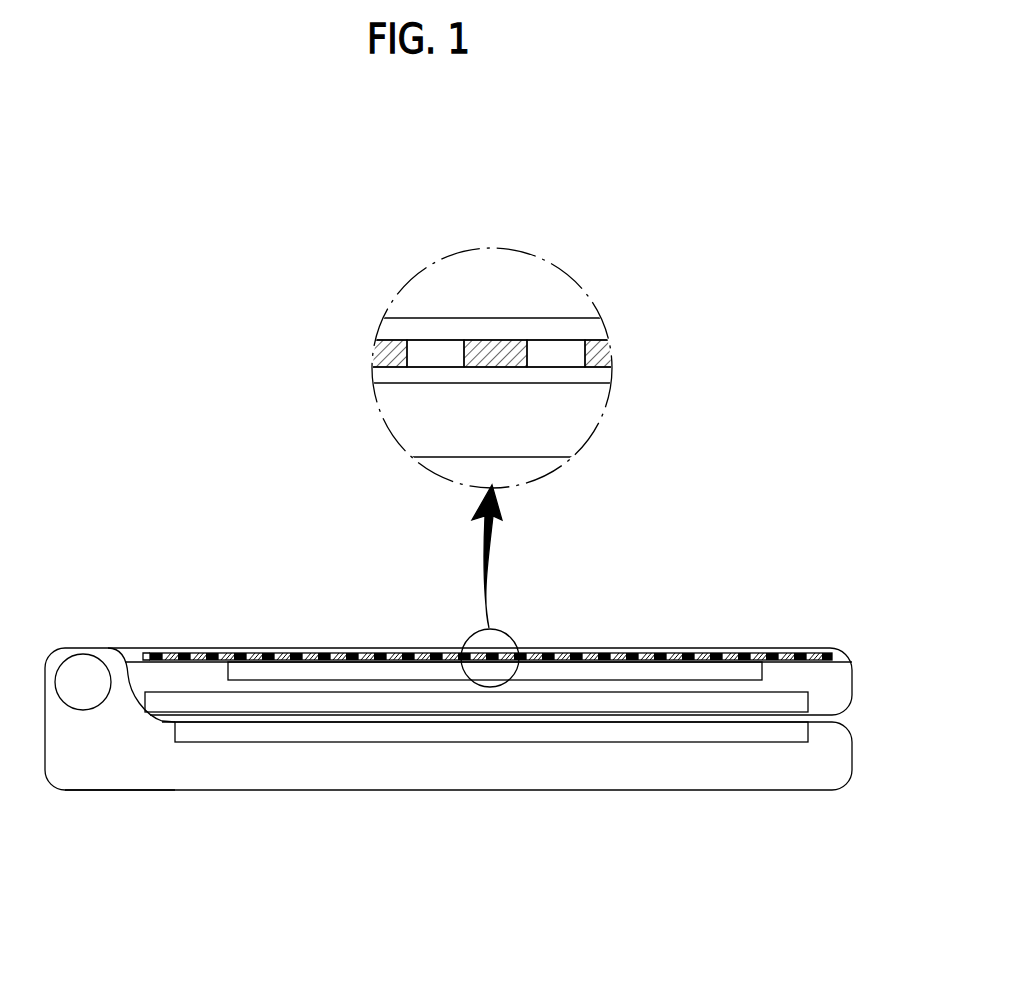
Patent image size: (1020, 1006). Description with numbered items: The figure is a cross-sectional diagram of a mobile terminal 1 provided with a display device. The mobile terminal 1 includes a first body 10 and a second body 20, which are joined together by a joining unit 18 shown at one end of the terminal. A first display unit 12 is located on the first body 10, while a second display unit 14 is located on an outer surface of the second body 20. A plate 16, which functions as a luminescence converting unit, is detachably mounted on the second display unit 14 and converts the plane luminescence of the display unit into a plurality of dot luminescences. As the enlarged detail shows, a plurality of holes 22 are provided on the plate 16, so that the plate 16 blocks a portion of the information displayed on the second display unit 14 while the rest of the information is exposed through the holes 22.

The mobile terminal 1 is at (102, 812).
The first body 10 is at (842, 752).
The first display unit 12 is at (328, 733).
The second display unit 14 is at (360, 668).
The plate 16 is at (700, 657).
The joining unit 18 is at (84, 665).
The second body 20 is at (842, 683).
The holes 22 is at (550, 350).